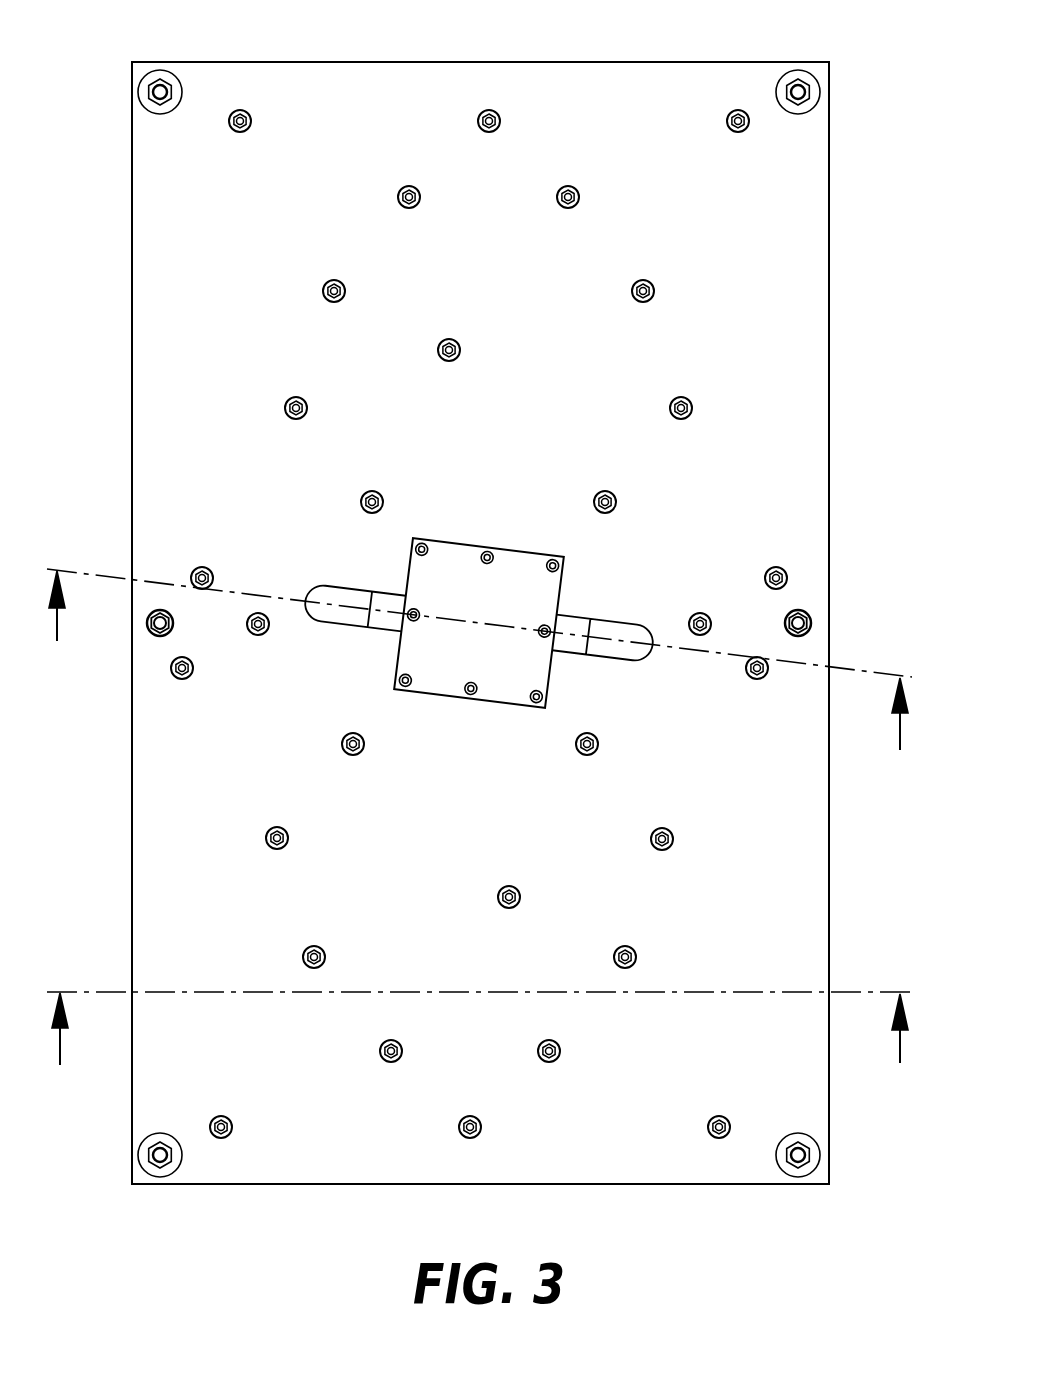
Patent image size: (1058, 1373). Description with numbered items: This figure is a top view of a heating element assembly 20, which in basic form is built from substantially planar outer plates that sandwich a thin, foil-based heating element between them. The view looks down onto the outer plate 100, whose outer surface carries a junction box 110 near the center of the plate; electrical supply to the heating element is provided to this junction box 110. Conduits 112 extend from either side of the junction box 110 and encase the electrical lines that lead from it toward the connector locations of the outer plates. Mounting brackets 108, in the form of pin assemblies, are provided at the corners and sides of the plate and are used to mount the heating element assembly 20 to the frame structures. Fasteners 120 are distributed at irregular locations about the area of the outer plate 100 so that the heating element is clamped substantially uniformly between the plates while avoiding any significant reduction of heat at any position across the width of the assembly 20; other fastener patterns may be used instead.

The heating element assembly 20 is at (70, 128).
The outer plate 100 is at (199, 773).
The mounting bracket 108 is at (803, 72).
The junction box 110 is at (427, 574).
The conduit 112 is at (312, 590).
The fastener 120 is at (408, 186).